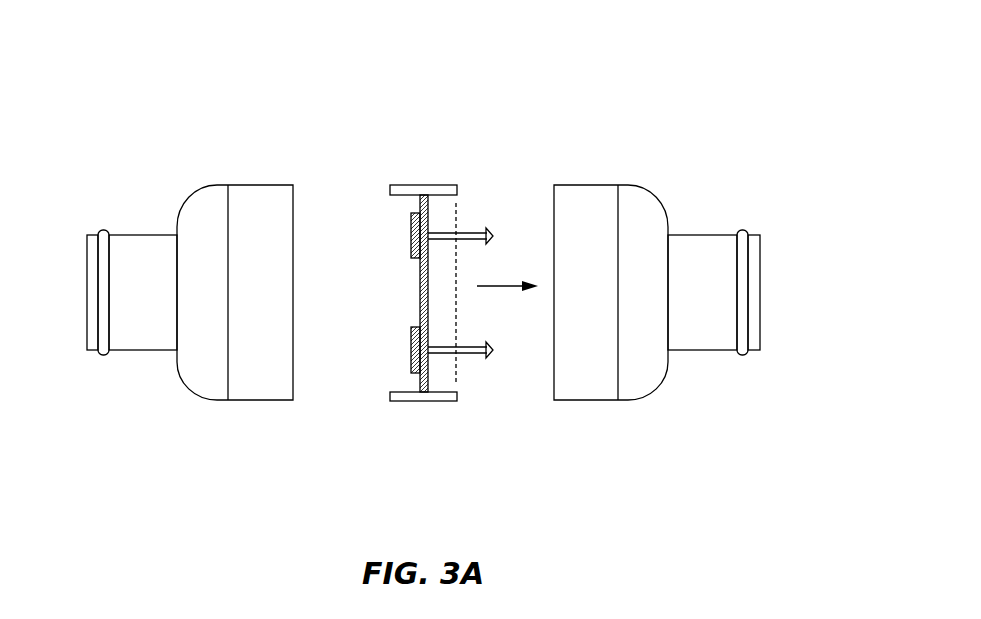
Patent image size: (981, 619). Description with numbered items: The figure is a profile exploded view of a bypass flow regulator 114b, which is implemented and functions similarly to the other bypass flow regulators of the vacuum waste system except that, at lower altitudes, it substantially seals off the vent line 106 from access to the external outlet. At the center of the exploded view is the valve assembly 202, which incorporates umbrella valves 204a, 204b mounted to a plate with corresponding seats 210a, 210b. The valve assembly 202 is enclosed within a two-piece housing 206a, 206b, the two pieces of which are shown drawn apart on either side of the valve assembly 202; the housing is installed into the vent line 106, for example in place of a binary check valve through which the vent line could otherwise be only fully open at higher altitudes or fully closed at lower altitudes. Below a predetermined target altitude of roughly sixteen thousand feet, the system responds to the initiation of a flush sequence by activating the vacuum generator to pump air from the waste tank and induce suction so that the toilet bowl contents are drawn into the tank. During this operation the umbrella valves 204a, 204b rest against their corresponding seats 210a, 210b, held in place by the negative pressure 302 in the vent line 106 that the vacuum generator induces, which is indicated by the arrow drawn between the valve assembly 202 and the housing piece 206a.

The bypass flow regulator 114b is at (87, 86).
The vent line 106 is at (156, 345).
The valve assembly 202 is at (425, 401).
The umbrella valve 204a is at (410, 242).
The umbrella valve 204b is at (410, 359).
The housing piece 206a is at (592, 188).
The housing piece 206b is at (256, 188).
The seat 210a is at (428, 232).
The seat 210b is at (428, 355).
The negative pressure 302 is at (508, 288).